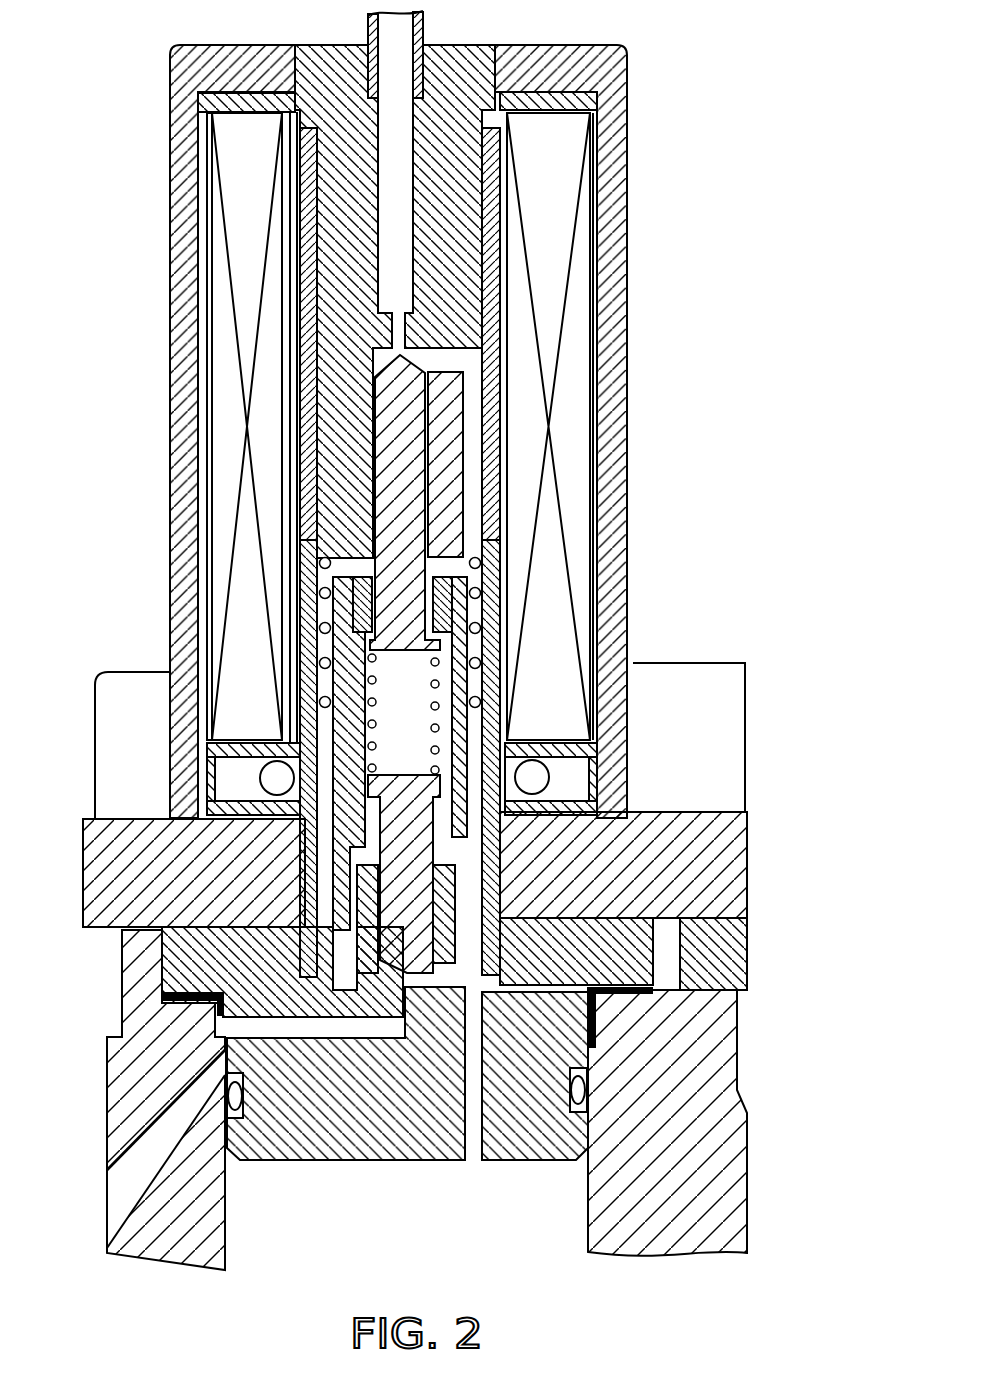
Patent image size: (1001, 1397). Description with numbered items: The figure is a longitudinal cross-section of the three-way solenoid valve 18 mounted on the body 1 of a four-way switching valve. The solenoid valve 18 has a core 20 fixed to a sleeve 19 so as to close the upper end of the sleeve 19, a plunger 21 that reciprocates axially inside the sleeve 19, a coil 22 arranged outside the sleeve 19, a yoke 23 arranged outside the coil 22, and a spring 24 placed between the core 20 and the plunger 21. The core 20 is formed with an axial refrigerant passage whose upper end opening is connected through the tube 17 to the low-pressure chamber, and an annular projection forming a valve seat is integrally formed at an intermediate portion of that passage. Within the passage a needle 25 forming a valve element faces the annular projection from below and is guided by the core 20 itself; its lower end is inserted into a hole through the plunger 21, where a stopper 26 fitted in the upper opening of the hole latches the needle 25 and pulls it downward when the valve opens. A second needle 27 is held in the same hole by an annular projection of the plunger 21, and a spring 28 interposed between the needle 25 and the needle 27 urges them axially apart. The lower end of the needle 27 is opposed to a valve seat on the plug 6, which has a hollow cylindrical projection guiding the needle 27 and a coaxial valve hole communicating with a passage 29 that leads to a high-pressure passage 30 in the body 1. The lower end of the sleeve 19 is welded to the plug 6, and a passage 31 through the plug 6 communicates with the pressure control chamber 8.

The body 1 is at (120, 1023).
The plug 6 is at (160, 956).
The pressure control chamber 8 is at (488, 1238).
The tube 17 is at (425, 26).
The three-way solenoid valve 18 is at (474, 492).
The sleeve 19 is at (492, 210).
The core 20 is at (490, 161).
The plunger 21 is at (478, 608).
The coil 22 is at (578, 435).
The yoke 23 is at (627, 290).
The spring 24 is at (482, 637).
The needle 25 is at (430, 398).
The stopper 26 is at (470, 580).
The needle 27 is at (428, 838).
The spring 28 is at (350, 652).
The passage 29 is at (285, 1028).
The high-pressure passage 30 is at (152, 1140).
The passage 31 is at (472, 1103).